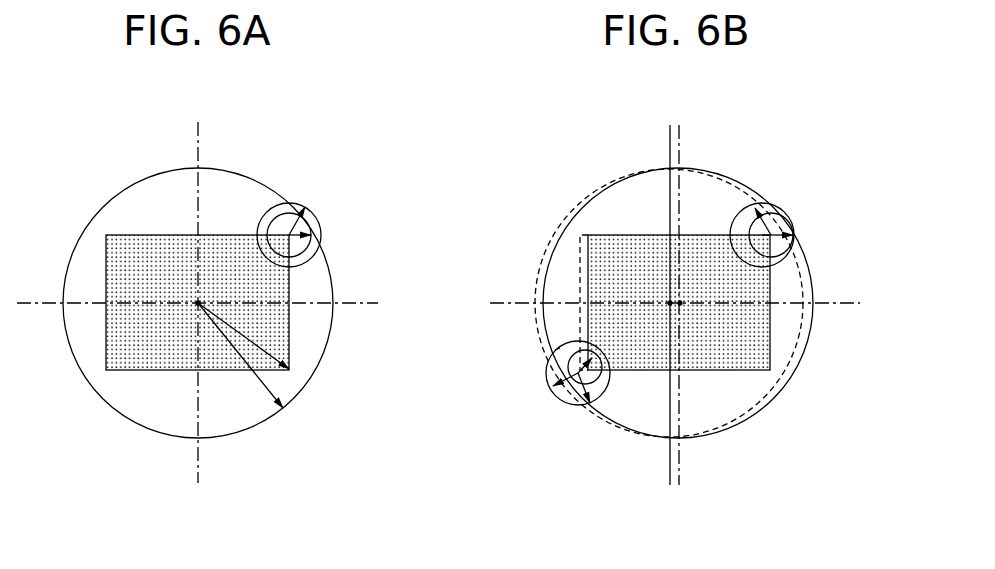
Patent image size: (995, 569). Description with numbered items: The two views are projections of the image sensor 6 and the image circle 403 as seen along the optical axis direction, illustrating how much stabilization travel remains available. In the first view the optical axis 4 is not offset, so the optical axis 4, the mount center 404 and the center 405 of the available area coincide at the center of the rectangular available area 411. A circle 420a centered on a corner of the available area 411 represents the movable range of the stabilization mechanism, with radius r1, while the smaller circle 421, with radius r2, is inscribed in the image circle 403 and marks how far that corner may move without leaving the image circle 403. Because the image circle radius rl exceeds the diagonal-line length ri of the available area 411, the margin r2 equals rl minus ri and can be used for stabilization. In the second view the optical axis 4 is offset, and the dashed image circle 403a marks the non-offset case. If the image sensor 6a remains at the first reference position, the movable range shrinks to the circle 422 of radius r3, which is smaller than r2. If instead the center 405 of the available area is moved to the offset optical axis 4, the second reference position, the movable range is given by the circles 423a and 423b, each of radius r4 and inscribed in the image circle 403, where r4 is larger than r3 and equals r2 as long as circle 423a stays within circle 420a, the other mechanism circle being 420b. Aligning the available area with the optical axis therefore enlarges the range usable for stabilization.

In FIG. 6A, the optical axis 4 is at (151, 392).
In FIG. 6B, the optical axis 4 is at (733, 395).
In FIG. 6A, the image sensor 6 is at (188, 244).
In FIG. 6B, the image sensor 6 is at (679, 226).
In FIG. 6B, the image sensor 6a is at (578, 275).
In FIG. 6A, the image circle 403 is at (72, 355).
In FIG. 6B, the image circle 403 is at (795, 371).
In FIG. 6B, the image circle 403a is at (551, 237).
In FIG. 6A, the mount center 404 is at (198, 303).
In FIG. 6B, the mount center 404 is at (670, 303).
In FIG. 6B, the center of the available area of the image sensor 405 is at (680, 303).
In FIG. 6A, the available area 411 is at (133, 235).
In FIG. 6B, the available area 411 is at (652, 235).
In FIG. 6A, the circle 420a is at (306, 211).
In FIG. 6B, the circle 420a is at (742, 213).
In FIG. 6B, the circle 420b is at (580, 405).
In FIG. 6A, the circle 421 is at (312, 236).
In FIG. 6B, the circle 422 is at (555, 350).
In FIG. 6B, the circle 423a is at (794, 262).
In FIG. 6B, the circle 423b is at (591, 405).
In FIG. 6A, the movement range radius r1 is at (299, 205).
In FIG. 6B, the movement range radius r1 is at (768, 206).
In FIG. 6A, the radius of circle 421 r2 is at (294, 248).
In FIG. 6B, the radius of circle 422 r3 is at (568, 408).
In FIG. 6B, the radius of circles 423a and 423b r4 is at (784, 216).
In FIG. 6A, the diagonal-line length of the available area ri is at (243, 336).
In FIG. 6A, the radius of the image circle rl is at (240, 355).